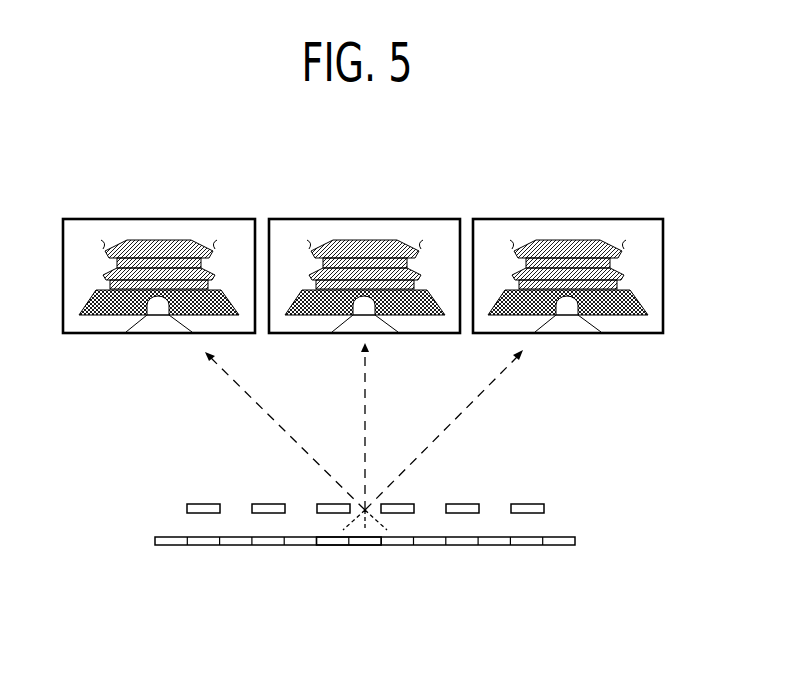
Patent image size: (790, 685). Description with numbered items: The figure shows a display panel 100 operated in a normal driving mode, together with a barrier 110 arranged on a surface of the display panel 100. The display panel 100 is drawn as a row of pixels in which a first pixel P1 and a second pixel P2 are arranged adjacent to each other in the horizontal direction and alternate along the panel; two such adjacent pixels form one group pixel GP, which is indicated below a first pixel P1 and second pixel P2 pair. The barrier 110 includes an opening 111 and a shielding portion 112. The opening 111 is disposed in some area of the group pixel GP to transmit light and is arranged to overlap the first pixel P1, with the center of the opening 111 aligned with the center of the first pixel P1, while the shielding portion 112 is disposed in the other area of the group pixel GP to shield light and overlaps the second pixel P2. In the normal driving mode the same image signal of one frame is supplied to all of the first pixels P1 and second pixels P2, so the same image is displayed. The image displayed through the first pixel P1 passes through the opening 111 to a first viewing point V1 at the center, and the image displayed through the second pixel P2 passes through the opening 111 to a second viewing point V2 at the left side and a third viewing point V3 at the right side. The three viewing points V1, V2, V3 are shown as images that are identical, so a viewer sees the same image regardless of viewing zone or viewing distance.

The display panel 100 is at (575, 541).
The barrier 110 is at (628, 475).
The opening 111 is at (496, 508).
The shielding portion 112 is at (543, 508).
The group pixel GP is at (325, 577).
The first pixel P1 is at (365, 564).
The second pixel P2 is at (365, 564).
The first viewing point V1 is at (364, 244).
The second viewing point V2 is at (159, 244).
The third viewing point V3 is at (568, 244).